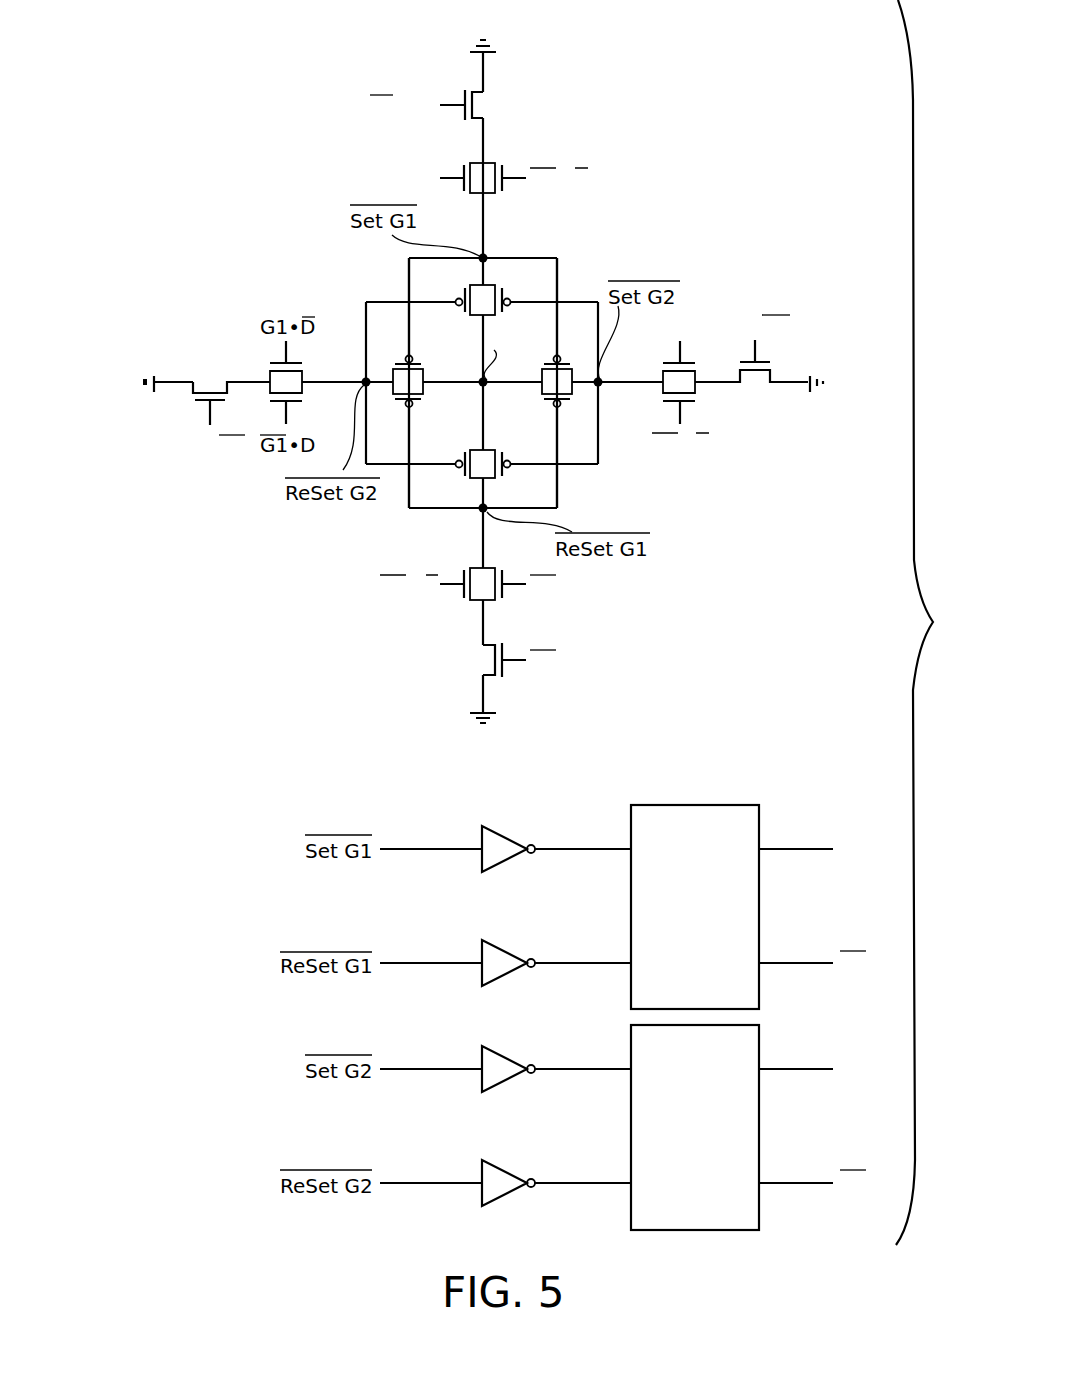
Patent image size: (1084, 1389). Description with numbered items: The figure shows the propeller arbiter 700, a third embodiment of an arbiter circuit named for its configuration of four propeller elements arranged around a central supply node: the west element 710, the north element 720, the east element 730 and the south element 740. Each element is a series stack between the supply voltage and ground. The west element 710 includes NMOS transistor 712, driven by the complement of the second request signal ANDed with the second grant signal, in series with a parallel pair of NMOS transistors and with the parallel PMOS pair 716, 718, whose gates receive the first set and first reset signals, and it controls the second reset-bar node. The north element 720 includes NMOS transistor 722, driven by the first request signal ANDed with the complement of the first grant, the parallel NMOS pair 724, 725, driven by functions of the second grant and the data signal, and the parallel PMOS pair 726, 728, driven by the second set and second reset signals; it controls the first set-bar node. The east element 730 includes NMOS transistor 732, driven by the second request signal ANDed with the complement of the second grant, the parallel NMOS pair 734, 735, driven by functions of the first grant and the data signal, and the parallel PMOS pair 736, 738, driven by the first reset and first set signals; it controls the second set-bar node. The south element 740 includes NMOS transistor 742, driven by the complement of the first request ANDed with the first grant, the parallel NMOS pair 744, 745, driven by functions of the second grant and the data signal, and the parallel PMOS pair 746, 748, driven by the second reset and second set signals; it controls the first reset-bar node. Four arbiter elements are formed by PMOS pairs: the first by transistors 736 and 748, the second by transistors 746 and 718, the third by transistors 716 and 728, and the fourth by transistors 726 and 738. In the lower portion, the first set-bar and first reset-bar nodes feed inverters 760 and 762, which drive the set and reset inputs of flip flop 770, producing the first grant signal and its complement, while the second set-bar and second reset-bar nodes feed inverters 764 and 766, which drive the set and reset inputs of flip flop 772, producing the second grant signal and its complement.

The propeller arbiter circuit 700 is at (276, 584).
The west element 710 is at (130, 385).
The NMOS transistor 712 is at (204, 392).
The PMOS transistor 716 is at (415, 360).
The PMOS transistor 718 is at (415, 403).
The north element 720 is at (481, 30).
The NMOS transistor 722 is at (488, 97).
The NMOS transistor 724 is at (465, 196).
The NMOS transistor 725 is at (500, 196).
The PMOS transistor 726 is at (517, 298).
The PMOS transistor 728 is at (462, 286).
The east element 730 is at (851, 383).
The NMOS transistor 732 is at (765, 376).
The NMOS transistor 734 is at (668, 400).
The NMOS transistor 735 is at (668, 364).
The PMOS transistor 736 is at (563, 403).
The PMOS transistor 738 is at (580, 352).
The south element 740 is at (485, 737).
The NMOS transistor 742 is at (490, 660).
The NMOS transistor 744 is at (515, 573).
The NMOS transistor 745 is at (465, 565).
The PMOS transistor 746 is at (462, 478).
The PMOS transistor 748 is at (505, 478).
The inverter 760 is at (508, 858).
The inverter 762 is at (508, 972).
The inverter 764 is at (508, 1078).
The inverter 766 is at (508, 1192).
The flip flop 770 is at (714, 919).
The flip flop 772 is at (714, 1137).